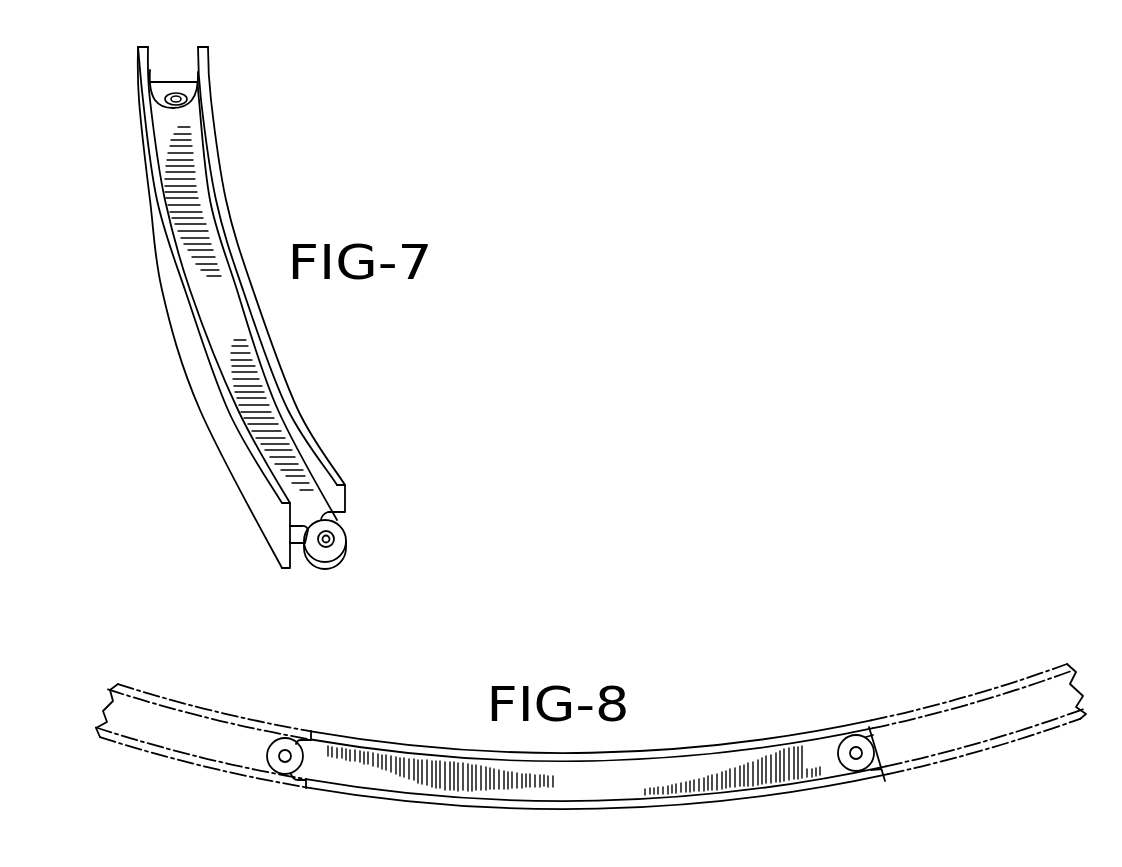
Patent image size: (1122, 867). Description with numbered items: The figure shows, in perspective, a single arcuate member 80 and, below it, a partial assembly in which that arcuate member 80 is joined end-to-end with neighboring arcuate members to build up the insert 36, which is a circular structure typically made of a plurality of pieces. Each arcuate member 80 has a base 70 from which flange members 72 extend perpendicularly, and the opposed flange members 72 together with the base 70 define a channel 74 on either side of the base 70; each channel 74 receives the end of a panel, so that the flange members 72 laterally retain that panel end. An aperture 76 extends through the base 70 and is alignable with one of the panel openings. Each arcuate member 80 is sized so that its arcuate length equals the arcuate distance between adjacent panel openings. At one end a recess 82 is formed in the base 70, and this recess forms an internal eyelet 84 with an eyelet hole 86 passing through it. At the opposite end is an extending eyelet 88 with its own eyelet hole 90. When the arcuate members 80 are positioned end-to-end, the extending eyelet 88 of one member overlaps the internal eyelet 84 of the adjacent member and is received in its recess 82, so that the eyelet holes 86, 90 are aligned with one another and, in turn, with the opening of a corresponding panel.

In FIG. 8, the insert 36 is at (797, 652).
In FIG. 7, the base 70 is at (178, 172).
In FIG. 7, the flange members 72 is at (160, 212).
In FIG. 7, the channel 74 is at (211, 275).
In FIG. 8, the aperture 76 is at (282, 752).
In FIG. 7, the arcuate member 80 is at (328, 422).
In FIG. 8, the arcuate member 80 is at (690, 738).
In FIG. 7, the recess 82 is at (150, 74).
In FIG. 7, the internal eyelet 84 is at (186, 92).
In FIG. 7, the eyelet hole 86 is at (177, 95).
In FIG. 7, the extending eyelet 88 is at (340, 540).
In FIG. 7, the eyelet hole 90 is at (288, 563).